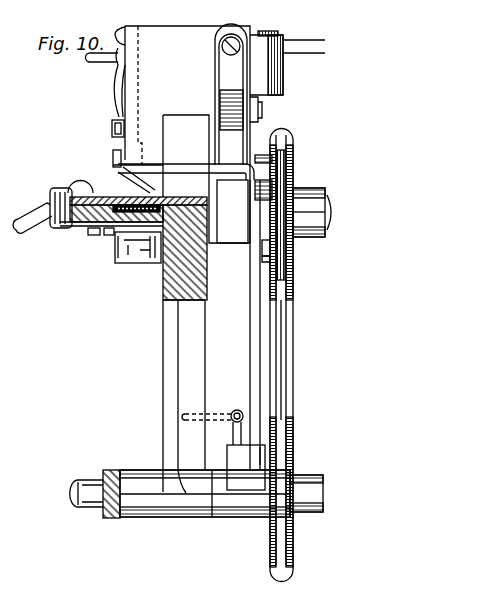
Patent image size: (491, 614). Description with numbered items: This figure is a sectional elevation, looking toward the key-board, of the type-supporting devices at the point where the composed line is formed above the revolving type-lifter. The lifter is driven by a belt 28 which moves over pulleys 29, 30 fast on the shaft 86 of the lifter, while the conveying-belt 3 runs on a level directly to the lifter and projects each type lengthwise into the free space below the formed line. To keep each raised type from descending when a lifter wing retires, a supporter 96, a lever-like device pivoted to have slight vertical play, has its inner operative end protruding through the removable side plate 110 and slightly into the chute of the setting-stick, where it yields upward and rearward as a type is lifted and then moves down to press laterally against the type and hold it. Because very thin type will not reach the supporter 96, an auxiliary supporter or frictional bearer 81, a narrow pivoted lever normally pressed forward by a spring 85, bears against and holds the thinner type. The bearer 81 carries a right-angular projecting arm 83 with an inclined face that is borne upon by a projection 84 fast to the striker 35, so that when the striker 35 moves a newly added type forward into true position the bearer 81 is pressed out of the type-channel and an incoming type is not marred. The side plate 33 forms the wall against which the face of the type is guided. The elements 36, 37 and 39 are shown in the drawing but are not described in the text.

The lever-like bearer 81 is at (118, 36).
The spring 85 is at (116, 85).
The removable side plate 110 is at (143, 78).
The striker 35 is at (150, 163).
The vertical pipe 36 is at (250, 341).
The right-angular projecting arm 83 is at (113, 156).
The projection 84 is at (120, 181).
The supporter 96 is at (35, 217).
The conveying-belt 3 is at (140, 200).
The collar 39 is at (266, 245).
The side plate 33 is at (272, 260).
The shaft 86 is at (312, 221).
The pulley 29 is at (293, 274).
The belt 28 is at (297, 328).
The eye bolt 37 is at (236, 411).
The pulley 30 is at (293, 451).